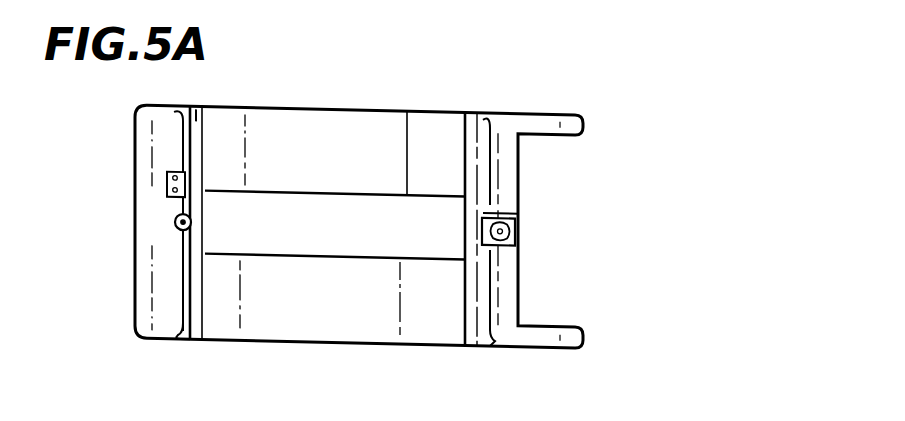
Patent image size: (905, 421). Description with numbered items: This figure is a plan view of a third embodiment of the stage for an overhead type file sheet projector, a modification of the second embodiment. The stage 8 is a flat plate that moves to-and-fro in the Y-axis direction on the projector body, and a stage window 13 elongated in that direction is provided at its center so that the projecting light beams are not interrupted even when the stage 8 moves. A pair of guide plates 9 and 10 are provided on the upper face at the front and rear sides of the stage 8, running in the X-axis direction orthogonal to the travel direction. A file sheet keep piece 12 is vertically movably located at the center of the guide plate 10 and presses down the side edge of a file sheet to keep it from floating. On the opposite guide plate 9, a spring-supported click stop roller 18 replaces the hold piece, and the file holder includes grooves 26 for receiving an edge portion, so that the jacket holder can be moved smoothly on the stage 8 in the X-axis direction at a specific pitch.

The stage 8 is at (139, 322).
The guide plate 9 is at (168, 341).
The guide plate 10 is at (485, 346).
The file sheet keep piece 12 is at (517, 233).
The stage window 13 is at (356, 259).
The click stop roller 18 is at (176, 224).
The groove 26 is at (197, 112).